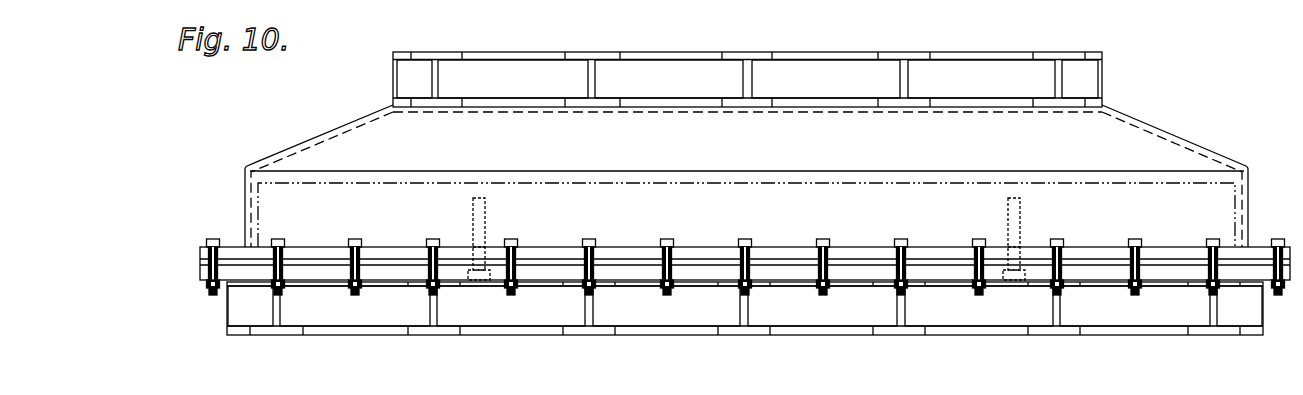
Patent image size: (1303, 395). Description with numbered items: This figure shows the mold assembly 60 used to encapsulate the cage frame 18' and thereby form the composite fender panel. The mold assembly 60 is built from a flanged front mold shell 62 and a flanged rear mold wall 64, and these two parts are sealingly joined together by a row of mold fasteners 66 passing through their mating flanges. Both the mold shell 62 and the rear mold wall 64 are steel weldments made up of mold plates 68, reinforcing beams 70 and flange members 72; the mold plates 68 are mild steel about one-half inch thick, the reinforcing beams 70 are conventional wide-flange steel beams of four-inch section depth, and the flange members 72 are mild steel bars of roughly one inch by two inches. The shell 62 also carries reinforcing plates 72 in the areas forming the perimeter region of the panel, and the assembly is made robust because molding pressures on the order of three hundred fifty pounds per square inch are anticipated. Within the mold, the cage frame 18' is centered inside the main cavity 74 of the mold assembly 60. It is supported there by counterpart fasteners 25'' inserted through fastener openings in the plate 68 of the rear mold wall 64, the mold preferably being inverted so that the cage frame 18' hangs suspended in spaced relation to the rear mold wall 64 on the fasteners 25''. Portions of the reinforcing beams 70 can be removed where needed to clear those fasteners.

The mold assembly 60 is at (312, 114).
The flanged front mold shell 62 is at (392, 104).
The flanged rear mold wall 64 is at (226, 320).
The mold fasteners 66 is at (213, 239).
The mold plates 68 is at (281, 146).
The reinforcing beams 70 is at (518, 52).
The flange members 72 is at (200, 253).
The main cavity 74 is at (463, 146).
The cage frame 18' is at (746, 195).
The fasteners 25'' is at (734, 261).